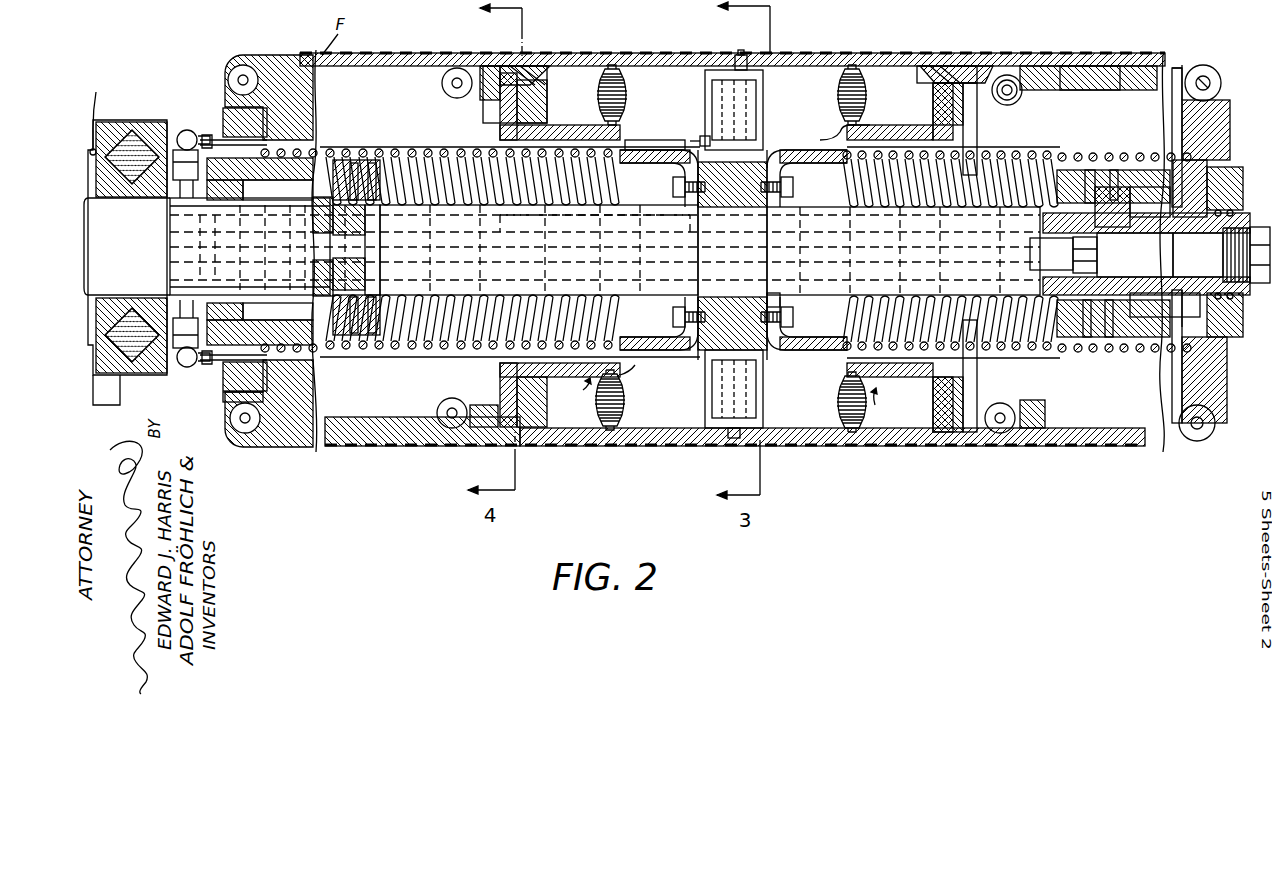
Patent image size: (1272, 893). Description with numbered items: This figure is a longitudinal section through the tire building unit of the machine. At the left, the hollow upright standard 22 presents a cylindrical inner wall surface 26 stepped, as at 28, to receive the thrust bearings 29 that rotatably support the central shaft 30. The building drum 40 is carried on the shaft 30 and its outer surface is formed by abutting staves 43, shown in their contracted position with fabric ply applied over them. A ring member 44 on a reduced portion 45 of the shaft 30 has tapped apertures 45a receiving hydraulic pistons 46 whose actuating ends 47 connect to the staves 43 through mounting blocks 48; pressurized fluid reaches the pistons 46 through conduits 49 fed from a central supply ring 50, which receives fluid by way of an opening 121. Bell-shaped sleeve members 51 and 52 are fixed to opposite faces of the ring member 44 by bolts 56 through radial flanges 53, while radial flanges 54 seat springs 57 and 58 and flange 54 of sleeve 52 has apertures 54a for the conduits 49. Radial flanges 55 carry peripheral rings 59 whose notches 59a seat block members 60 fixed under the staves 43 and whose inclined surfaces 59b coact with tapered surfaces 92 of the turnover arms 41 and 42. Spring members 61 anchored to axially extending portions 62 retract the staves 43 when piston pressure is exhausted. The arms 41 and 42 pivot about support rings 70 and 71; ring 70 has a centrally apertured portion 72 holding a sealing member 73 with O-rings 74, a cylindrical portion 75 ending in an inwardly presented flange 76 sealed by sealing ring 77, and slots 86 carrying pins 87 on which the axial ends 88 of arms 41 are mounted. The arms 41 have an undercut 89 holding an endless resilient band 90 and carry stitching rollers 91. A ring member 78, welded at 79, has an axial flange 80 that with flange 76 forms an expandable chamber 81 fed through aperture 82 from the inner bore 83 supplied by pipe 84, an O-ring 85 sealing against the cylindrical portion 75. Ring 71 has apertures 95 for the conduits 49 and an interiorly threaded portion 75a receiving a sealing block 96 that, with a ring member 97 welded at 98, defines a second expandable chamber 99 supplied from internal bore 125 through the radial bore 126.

The upright standard 22 is at (127, 261).
The cylindrical inner wall surface 26 is at (98, 113).
The step 28 is at (186, 130).
The thrust bearing 29 is at (130, 155).
The central shaft 30 is at (652, 292).
The central building drum 40 is at (703, 250).
The turnover arm 41 is at (1140, 60).
The turnover arm 42 is at (435, 58).
The stave 43 is at (900, 60).
The ring member 44 is at (704, 198).
The reduced portion 45 is at (732, 207).
The tapped aperture 45a is at (702, 136).
The hydraulic piston 46 is at (705, 92).
The actuating end 47 is at (748, 65).
The mounting block 48 is at (740, 52).
The conduit 49 is at (627, 152).
The central source 50 is at (186, 368).
The bell-shaped sleeve member 51 is at (884, 401).
The bell-shaped sleeve member 52 is at (574, 392).
The radial flange 53 is at (780, 300).
The radial flange 54 is at (838, 136).
The aperture 54a is at (635, 140).
The radial flange 55 is at (965, 105).
The bolt 56 is at (672, 188).
The spring 57 is at (1030, 155).
The spring 58 is at (440, 155).
The peripheral ring 59 is at (512, 62).
The notch 59a is at (545, 64).
The inclined surface 59b is at (512, 66).
The block member 60 is at (592, 78).
The spring member 61 is at (598, 88).
The axially extending portion 62 is at (570, 128).
The support ring 70 is at (1228, 125).
The support ring 71 is at (222, 385).
The centrally apertured portion 72 is at (1232, 178).
The sealing member 73 is at (1233, 210).
The O-ring 74 is at (1230, 300).
The cylindrical portion 75 is at (354, 165).
The threaded portion 75a is at (375, 163).
The inwardly presented flange 76 is at (1070, 172).
The sealing ring 77 is at (1090, 170).
The ring member 78 is at (1138, 305).
The weld 79 is at (1140, 218).
The axially extending flange 80 is at (1068, 340).
The expandable chamber 81 is at (1086, 340).
The aperture 82 is at (1070, 255).
The inner bore 83 is at (1221, 255).
The pipe 84 is at (1120, 265).
The O-ring 85 is at (1109, 340).
The slot 86 is at (1225, 105).
The pin 87 is at (1208, 82).
The axial end 88 is at (1203, 75).
The undercut 89 is at (1055, 80).
The endless resilient band 90 is at (1095, 62).
The roller 91 is at (1018, 97).
The tapered surface 92 is at (482, 100).
The aperture 95 is at (250, 140).
The sealing block 96 is at (386, 335).
The ring member 97 is at (353, 335).
The weld 98 is at (328, 193).
The expandable chamber 99 is at (355, 160).
The opening 121 is at (190, 215).
The internal bore 125 is at (385, 222).
The bore 126 is at (330, 222).